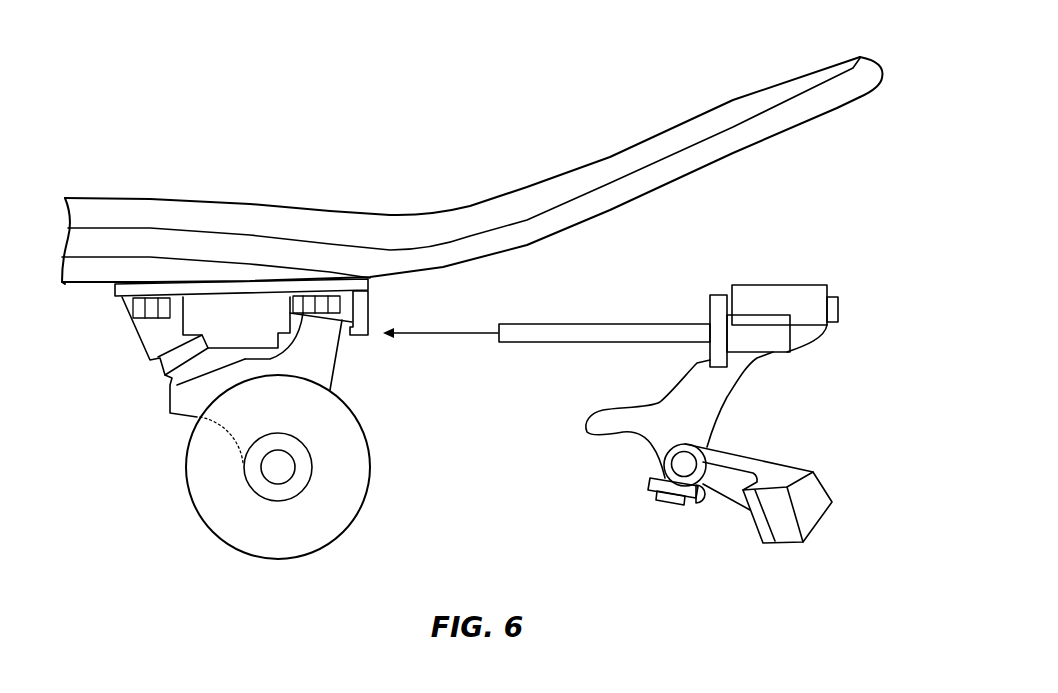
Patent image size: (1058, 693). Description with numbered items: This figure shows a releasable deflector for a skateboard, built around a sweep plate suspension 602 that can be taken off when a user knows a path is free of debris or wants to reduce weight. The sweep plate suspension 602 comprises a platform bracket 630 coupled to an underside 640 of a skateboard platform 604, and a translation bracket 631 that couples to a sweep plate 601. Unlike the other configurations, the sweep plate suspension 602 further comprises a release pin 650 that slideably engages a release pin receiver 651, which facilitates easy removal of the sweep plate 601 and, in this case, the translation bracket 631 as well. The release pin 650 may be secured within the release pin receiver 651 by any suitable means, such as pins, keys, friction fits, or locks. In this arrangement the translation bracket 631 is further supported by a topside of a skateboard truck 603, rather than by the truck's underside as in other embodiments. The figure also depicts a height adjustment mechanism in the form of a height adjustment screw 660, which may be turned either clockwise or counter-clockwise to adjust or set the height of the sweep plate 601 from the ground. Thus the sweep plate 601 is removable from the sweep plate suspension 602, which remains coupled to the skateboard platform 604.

The skateboard platform 604 is at (765, 100).
The underside of skateboard platform 640 is at (766, 158).
The platform bracket 630 is at (387, 306).
The release pin receiver 651 is at (358, 335).
The release pin 650 is at (563, 343).
The sweep plate suspension 602 is at (719, 272).
The translation bracket 631 is at (766, 410).
The skateboard truck 603 is at (273, 467).
The height adjustment screw 660 is at (672, 497).
The sweep plate 601 is at (800, 497).